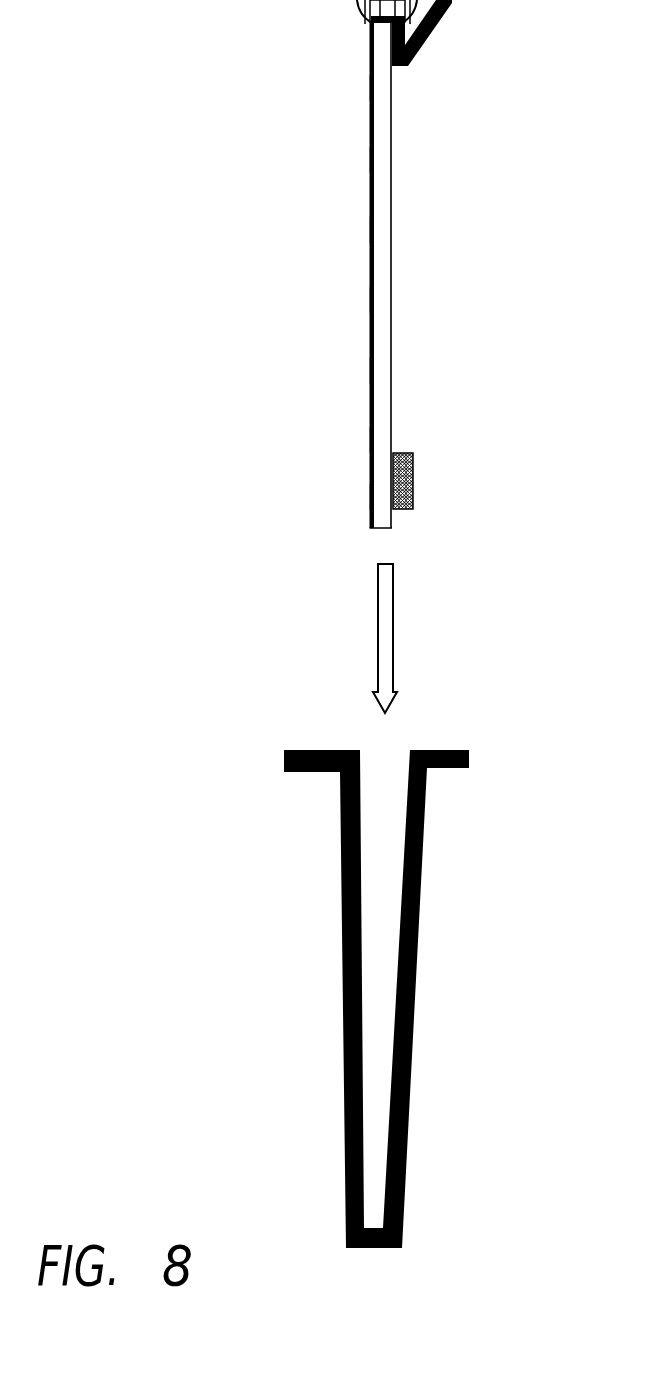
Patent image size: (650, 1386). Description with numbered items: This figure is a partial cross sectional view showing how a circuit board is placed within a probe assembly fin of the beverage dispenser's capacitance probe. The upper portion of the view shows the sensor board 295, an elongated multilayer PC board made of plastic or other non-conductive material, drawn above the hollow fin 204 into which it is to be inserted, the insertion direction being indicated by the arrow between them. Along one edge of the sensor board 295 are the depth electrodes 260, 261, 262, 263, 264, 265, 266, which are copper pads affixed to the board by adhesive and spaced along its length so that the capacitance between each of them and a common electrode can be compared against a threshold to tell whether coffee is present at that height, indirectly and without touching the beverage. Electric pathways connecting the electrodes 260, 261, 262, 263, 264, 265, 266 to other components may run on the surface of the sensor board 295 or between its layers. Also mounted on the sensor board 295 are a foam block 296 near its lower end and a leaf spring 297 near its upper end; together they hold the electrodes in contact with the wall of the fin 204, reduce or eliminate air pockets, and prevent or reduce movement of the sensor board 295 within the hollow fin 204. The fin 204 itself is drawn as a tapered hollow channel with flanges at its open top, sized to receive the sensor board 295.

The hollow fin 204 is at (418, 958).
The electrode 260 is at (369, 497).
The electrode 261 is at (369, 440).
The electrode 262 is at (369, 371).
The electrode 263 is at (369, 300).
The electrode 264 is at (369, 230).
The electrode 265 is at (369, 160).
The electrode 266 is at (369, 88).
The sensor board 295 is at (381, 283).
The foam block 296 is at (413, 472).
The leaf spring 297 is at (432, 27).